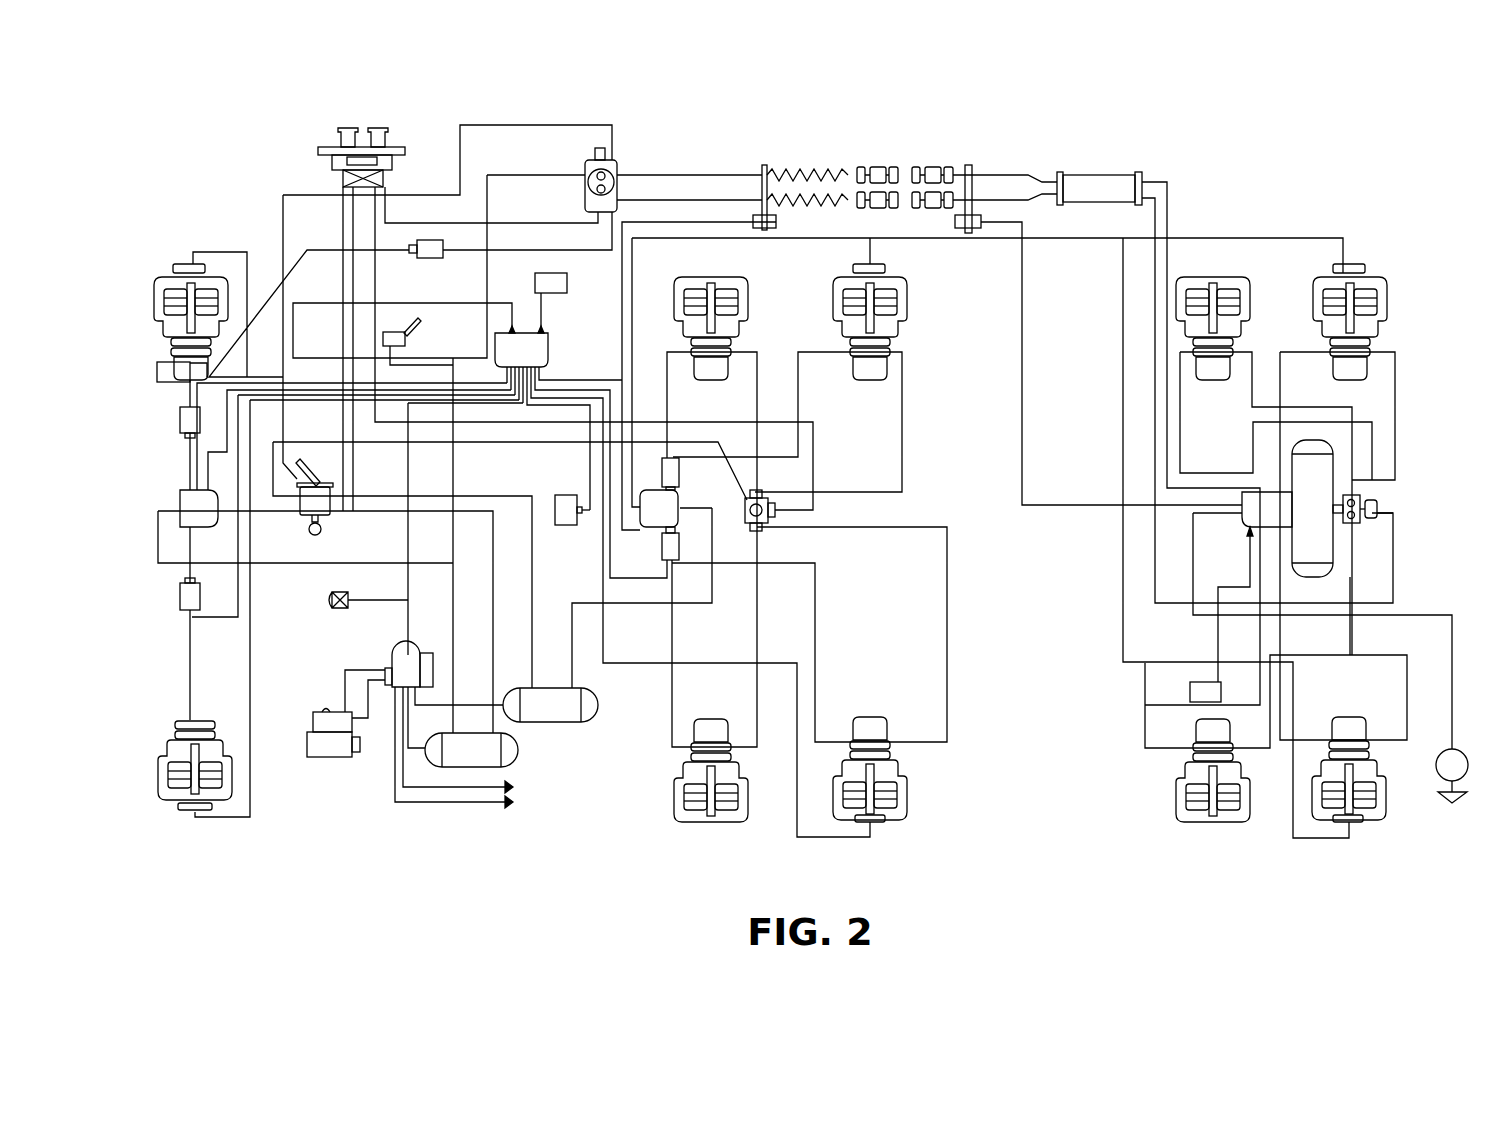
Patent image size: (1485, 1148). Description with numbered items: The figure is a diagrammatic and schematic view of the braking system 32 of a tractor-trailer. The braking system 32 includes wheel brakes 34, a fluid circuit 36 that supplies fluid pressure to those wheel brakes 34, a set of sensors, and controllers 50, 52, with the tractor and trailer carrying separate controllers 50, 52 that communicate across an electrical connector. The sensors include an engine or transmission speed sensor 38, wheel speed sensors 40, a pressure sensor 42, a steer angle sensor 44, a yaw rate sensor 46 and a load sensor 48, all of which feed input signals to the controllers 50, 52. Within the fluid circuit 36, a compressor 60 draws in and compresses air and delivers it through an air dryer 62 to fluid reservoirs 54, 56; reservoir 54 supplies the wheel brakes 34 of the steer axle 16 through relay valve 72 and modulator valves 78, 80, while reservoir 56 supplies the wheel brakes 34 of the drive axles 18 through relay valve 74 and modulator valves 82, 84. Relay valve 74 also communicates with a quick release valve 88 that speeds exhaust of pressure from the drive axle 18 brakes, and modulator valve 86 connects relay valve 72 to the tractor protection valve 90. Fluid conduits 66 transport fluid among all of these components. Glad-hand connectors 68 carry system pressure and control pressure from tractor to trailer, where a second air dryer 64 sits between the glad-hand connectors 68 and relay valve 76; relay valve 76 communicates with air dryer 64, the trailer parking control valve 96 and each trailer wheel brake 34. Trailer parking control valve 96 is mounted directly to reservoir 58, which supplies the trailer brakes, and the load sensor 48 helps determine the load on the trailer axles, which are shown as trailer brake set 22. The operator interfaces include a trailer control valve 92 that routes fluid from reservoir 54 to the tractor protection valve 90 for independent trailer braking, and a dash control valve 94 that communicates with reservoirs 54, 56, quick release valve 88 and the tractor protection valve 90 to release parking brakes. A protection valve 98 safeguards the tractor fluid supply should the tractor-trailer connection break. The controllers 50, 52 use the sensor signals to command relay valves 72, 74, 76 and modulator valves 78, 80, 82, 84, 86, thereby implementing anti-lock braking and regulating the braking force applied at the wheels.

The steer axle 16 is at (172, 812).
The drive axle 18 is at (777, 805).
The trailer brake chambers 22 is at (1272, 807).
The braking system 32 is at (250, 115).
The wheel brakes 34 is at (155, 295).
The fluid circuit 36 is at (466, 745).
The engine or transmission speed sensor 38 is at (567, 290).
The wheel speed sensor 40 is at (185, 263).
The pressure sensor 42 is at (157, 372).
The steer angle sensor 44 is at (332, 600).
The yaw rate sensor 46 is at (555, 505).
The load sensor 48 is at (1190, 690).
The controller 50 is at (550, 348).
The controller 52 is at (1245, 527).
The fluid reservoir 54 is at (505, 755).
The fluid reservoir 56 is at (578, 724).
The fluid reservoir 58 is at (1320, 560).
The compressor 60 is at (330, 750).
The air dryer 62 is at (395, 665).
The air dryer 64 is at (1128, 180).
The fluid conduits 66 is at (815, 595).
The glad-hand connectors 68 is at (900, 165).
The relay valve 72 is at (180, 500).
The relay valve 74 is at (655, 510).
The relay valve 76 is at (312, 520).
The modulator valve 78 is at (180, 420).
The modulator valve 80 is at (180, 595).
The modulator valve 82 is at (680, 470).
The modulator valve 84 is at (680, 548).
The modulator valve 86 is at (428, 240).
The quick release valve 88 is at (768, 495).
The tractor protection valve 90 is at (612, 152).
The trailer control valve 92 is at (410, 330).
The dash control valve 94 is at (352, 128).
The trailer parking control valve 96 is at (1378, 505).
The valve 98 is at (967, 228).